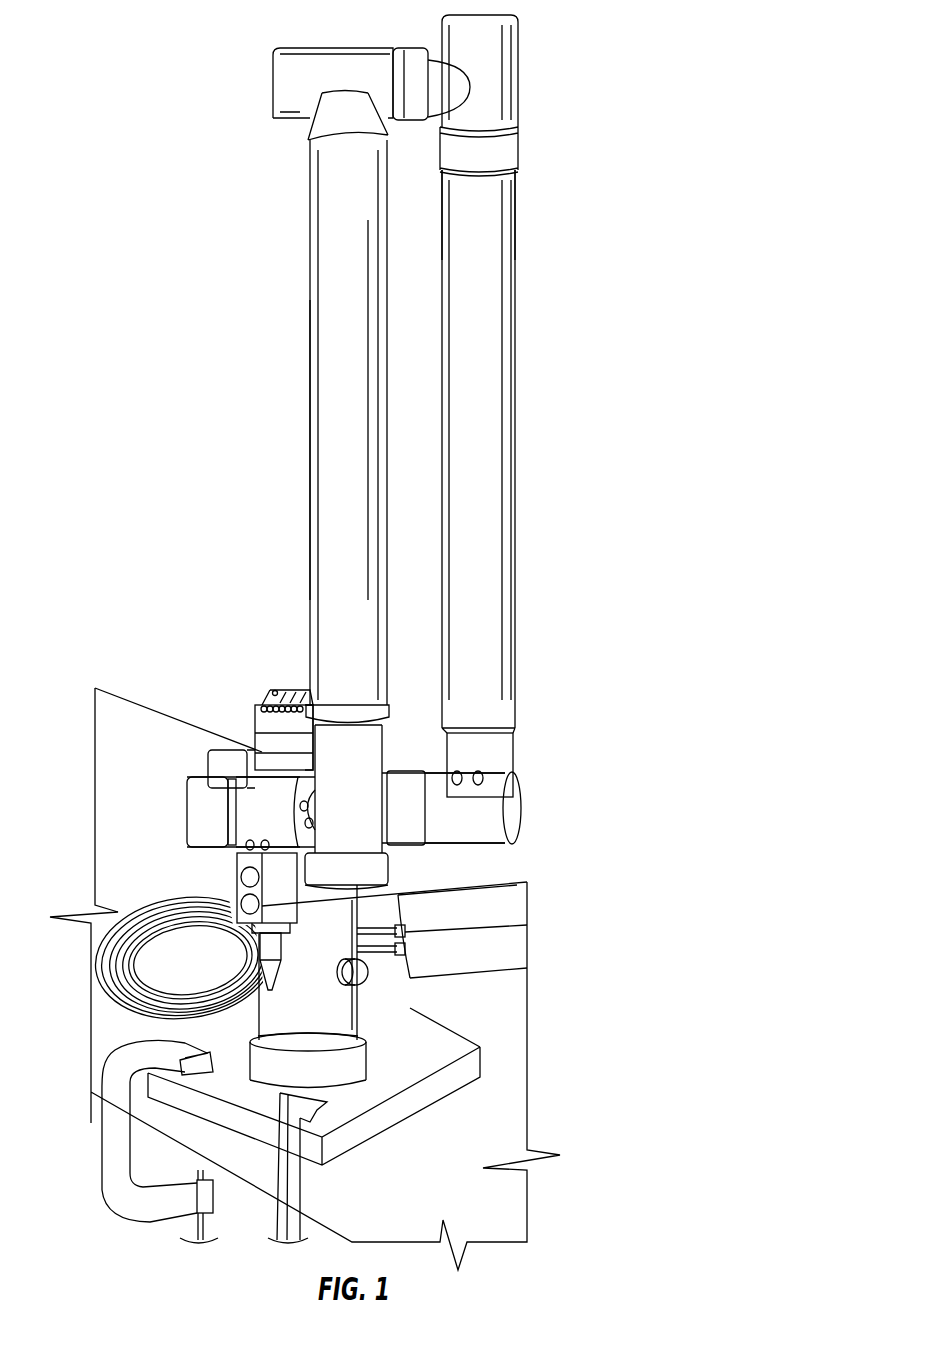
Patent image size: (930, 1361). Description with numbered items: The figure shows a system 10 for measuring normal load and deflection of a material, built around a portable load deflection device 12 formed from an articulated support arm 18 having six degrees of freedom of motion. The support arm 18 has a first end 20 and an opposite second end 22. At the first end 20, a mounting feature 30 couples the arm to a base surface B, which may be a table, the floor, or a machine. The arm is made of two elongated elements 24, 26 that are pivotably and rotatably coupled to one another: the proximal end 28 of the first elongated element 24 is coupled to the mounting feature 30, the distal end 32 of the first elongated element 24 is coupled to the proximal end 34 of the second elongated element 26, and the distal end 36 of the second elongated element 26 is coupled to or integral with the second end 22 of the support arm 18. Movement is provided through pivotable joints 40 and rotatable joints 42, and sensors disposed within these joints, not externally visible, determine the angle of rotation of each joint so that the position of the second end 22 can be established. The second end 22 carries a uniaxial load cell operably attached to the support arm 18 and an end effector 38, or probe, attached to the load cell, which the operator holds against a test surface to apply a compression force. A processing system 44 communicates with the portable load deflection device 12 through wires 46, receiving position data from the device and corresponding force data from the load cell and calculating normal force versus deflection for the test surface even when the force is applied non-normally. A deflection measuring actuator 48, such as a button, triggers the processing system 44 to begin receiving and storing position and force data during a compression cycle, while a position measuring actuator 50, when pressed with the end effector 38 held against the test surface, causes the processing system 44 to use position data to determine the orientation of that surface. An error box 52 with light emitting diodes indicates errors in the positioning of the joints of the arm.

The system 10 is at (183, 34).
The portable load deflection device 12 is at (320, 78).
The support arm 18 is at (335, 308).
The first end 20 is at (372, 972).
The second end 22 is at (237, 885).
The first elongated element 24 is at (505, 497).
The second elongated element 26 is at (308, 457).
The proximal end 28 is at (505, 712).
The mounting feature 30 is at (370, 1090).
The distal end 32 is at (505, 203).
The proximal end 34 is at (330, 160).
The distal end 36 is at (308, 682).
The end effector 38 is at (290, 978).
The pivotable joint 40 is at (468, 110).
The rotatable joint 42 is at (497, 82).
The processing system 44 is at (487, 940).
The wires 46 is at (160, 925).
The deflection measuring actuator 48 is at (266, 905).
The position measuring actuator 50 is at (265, 870).
The error box 52 is at (313, 707).
The base surface B is at (93, 1092).